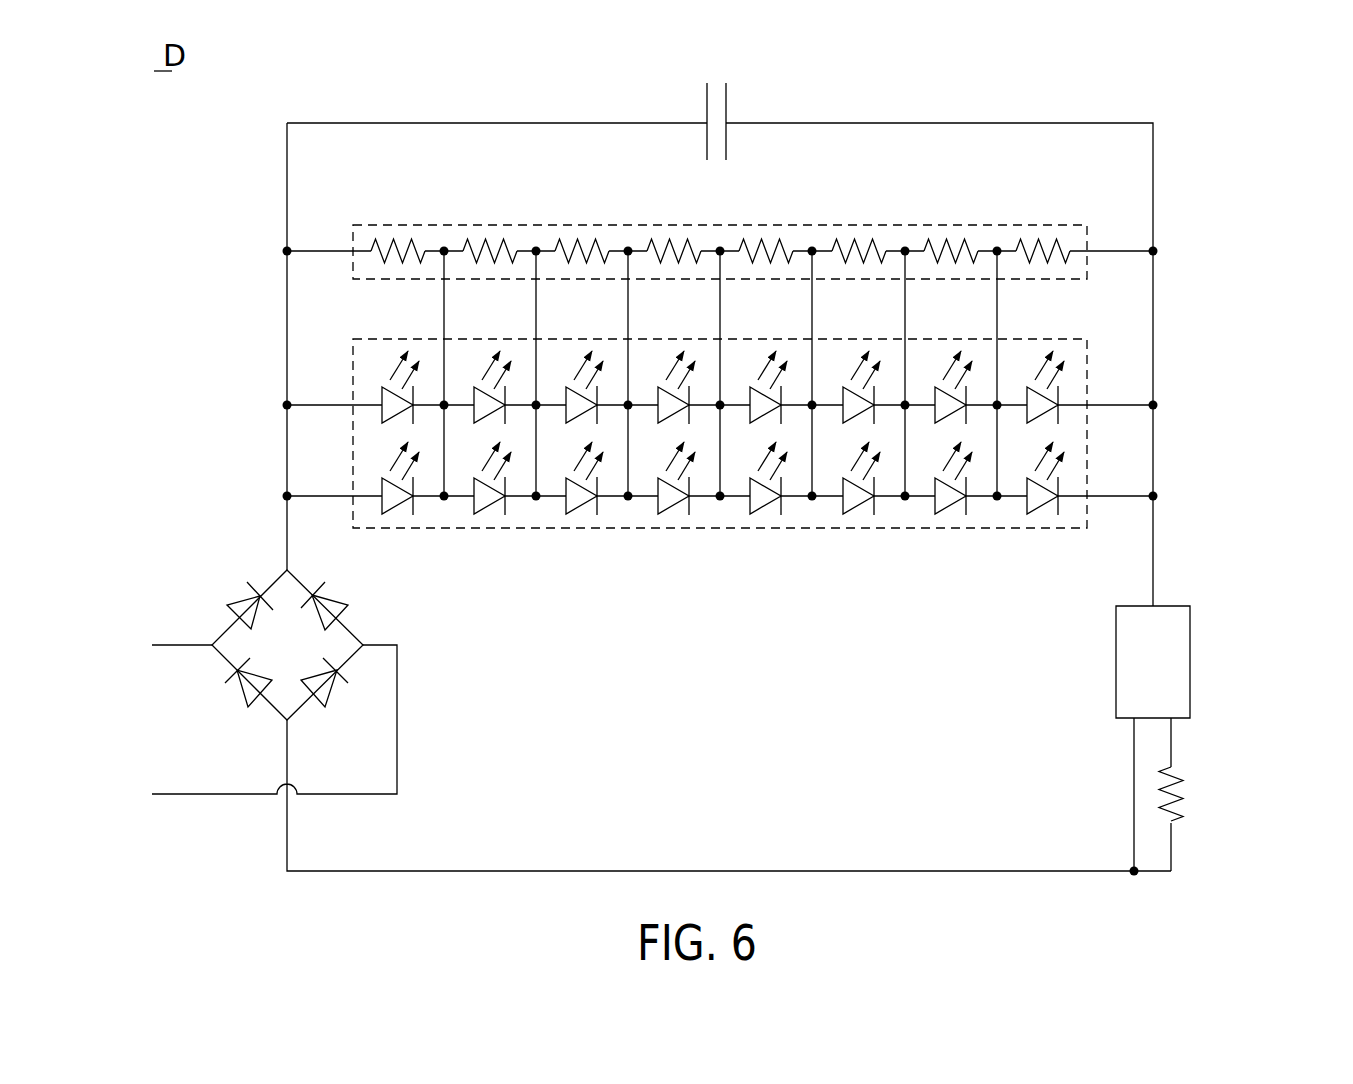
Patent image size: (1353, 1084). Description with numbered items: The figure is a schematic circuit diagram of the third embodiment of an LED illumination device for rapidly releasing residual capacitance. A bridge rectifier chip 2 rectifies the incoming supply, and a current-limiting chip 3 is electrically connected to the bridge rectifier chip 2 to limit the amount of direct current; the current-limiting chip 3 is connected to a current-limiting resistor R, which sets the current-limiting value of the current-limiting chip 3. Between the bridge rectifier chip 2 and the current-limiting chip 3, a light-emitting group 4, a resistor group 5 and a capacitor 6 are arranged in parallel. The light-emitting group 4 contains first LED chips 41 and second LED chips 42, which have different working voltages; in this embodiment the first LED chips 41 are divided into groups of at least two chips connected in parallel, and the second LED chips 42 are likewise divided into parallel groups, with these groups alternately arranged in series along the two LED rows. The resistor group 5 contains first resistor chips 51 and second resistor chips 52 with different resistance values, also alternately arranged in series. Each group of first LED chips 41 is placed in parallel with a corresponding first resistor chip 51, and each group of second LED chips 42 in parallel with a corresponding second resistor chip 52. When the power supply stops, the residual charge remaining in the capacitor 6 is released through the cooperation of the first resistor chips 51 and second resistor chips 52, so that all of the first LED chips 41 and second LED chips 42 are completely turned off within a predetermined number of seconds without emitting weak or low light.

The bridge rectifier chip 2 is at (242, 597).
The current-limiting chip 3 is at (1192, 660).
The light-emitting group 4 is at (1076, 535).
The first LED chip 41 is at (390, 392).
The second LED chip 42 is at (482, 392).
The resistor group 5 is at (1073, 222).
The first resistor chip 51 is at (398, 243).
The second resistor chip 52 is at (490, 243).
The capacitor 6 is at (705, 100).
The current-limiting resistor R is at (1185, 795).